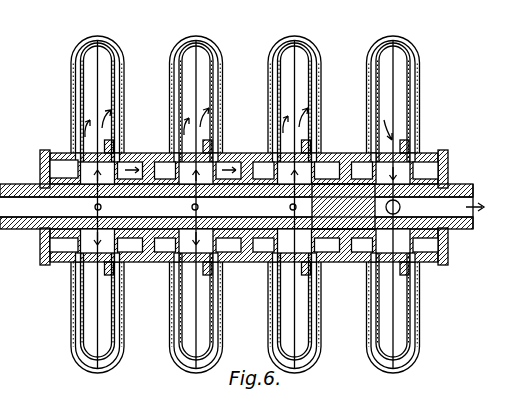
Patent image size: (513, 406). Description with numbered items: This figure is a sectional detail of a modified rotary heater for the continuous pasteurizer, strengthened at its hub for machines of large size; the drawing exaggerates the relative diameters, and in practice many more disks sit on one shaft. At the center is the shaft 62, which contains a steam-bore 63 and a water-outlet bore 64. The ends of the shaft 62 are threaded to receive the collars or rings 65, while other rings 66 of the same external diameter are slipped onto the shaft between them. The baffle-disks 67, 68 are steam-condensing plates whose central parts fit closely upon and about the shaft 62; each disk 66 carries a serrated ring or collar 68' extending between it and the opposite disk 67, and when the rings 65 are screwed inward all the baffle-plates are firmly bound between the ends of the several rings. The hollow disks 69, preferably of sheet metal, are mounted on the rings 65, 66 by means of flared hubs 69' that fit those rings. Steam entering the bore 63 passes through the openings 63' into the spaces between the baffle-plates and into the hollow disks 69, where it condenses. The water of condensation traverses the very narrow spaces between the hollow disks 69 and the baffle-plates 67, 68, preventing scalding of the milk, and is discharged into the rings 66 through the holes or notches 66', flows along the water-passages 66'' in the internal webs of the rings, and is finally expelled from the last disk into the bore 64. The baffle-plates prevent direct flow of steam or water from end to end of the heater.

The shaft 62 is at (93, 207).
The steam-bore 63 is at (247, 207).
The openings 63' is at (118, 226).
The water-outlet bore 64 is at (467, 196).
The collars or rings 65 is at (45, 156).
The rings 66 is at (244, 152).
The holes or notches 66' is at (257, 246).
The water-passages 66'' is at (244, 271).
The baffle-disk 67 is at (78, 88).
The baffle-disk 68 is at (246, 201).
The serrated ring or collar 68' is at (241, 169).
The hollow disk 69 is at (250, 200).
The flared hub 69' is at (257, 196).